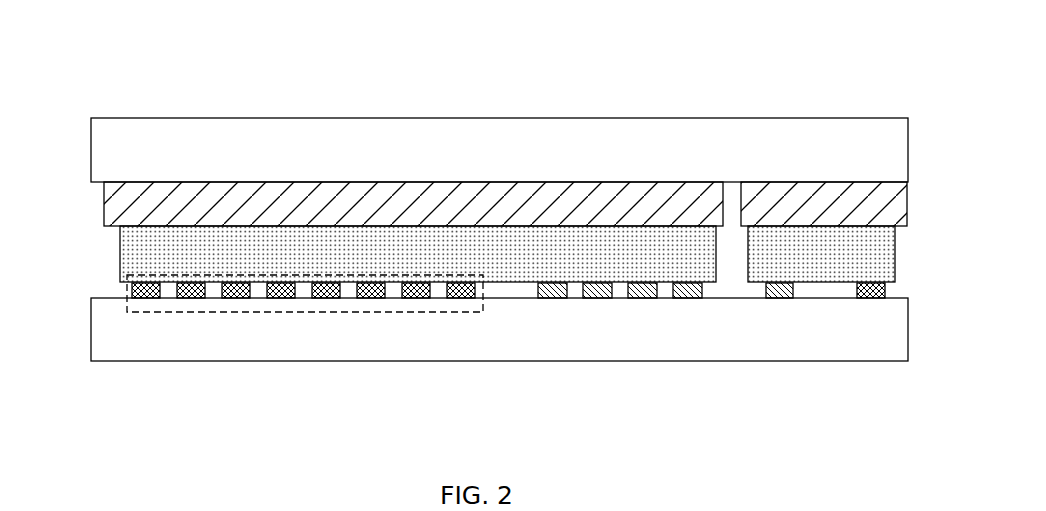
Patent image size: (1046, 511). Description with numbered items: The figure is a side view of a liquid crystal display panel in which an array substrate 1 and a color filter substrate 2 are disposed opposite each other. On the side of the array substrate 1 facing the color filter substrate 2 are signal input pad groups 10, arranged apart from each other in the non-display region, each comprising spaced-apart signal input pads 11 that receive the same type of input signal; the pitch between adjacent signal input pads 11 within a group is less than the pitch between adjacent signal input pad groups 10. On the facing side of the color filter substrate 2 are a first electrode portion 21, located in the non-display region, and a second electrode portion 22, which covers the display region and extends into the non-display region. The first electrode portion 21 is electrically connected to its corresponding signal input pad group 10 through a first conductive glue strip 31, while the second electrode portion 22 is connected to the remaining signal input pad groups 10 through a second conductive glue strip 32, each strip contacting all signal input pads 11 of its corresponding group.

The array substrate 1 is at (885, 339).
The color filter substrate 2 is at (887, 153).
The signal input pad group 10 is at (315, 312).
The signal input pad 11 is at (418, 296).
The first electrode portion 21 is at (807, 198).
The second electrode portion 22 is at (385, 207).
The first conductive glue strip 31 is at (850, 251).
The second conductive glue strip 32 is at (142, 252).